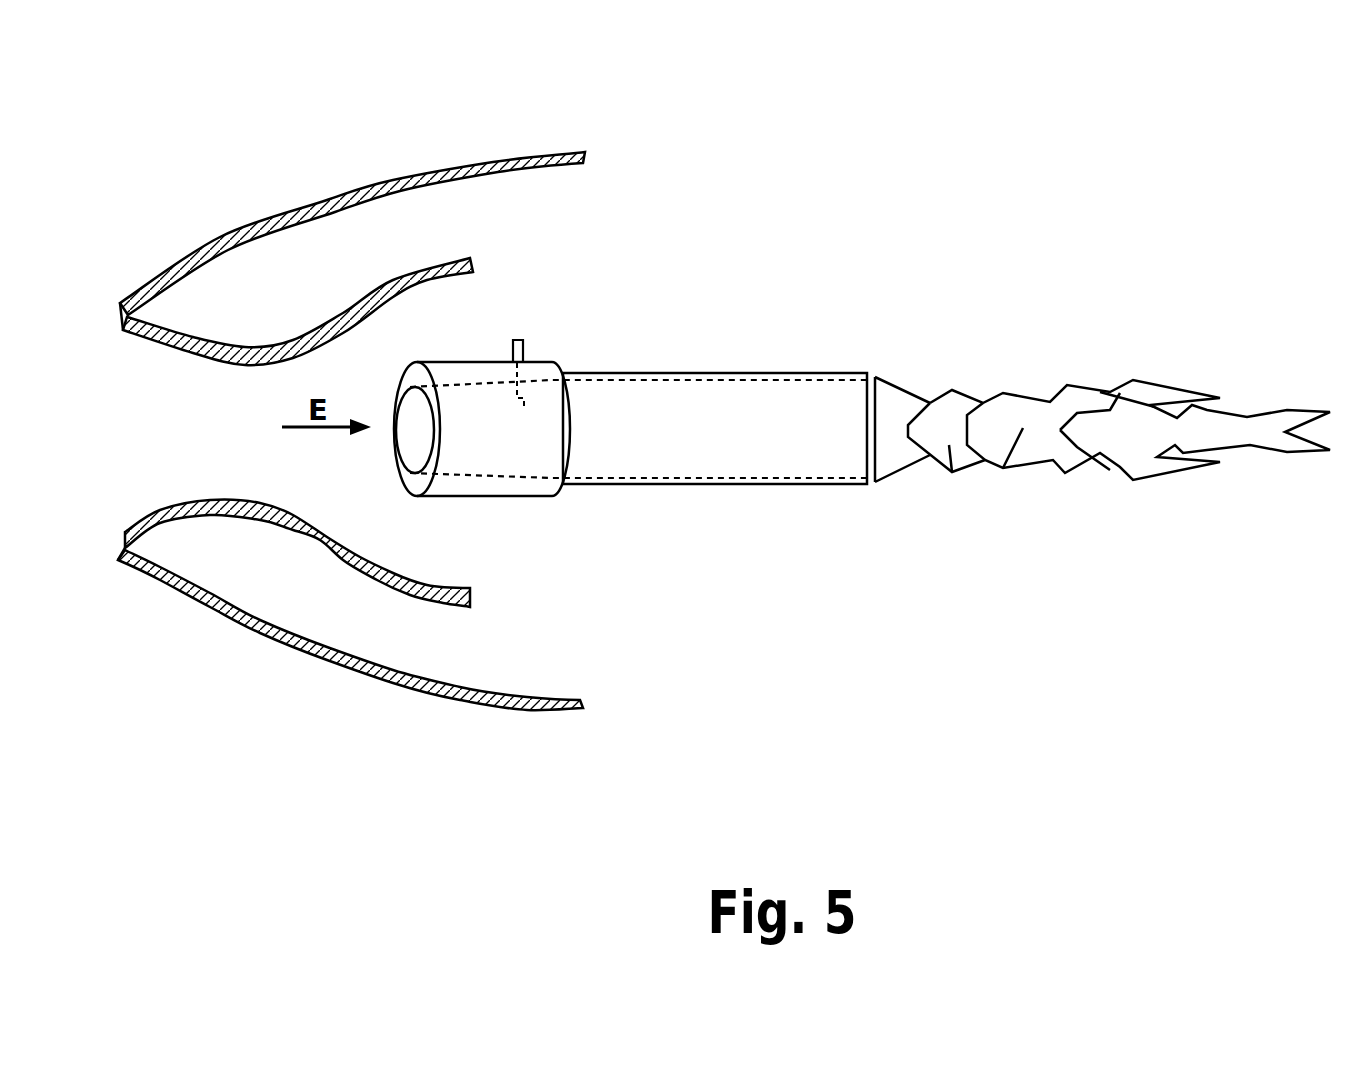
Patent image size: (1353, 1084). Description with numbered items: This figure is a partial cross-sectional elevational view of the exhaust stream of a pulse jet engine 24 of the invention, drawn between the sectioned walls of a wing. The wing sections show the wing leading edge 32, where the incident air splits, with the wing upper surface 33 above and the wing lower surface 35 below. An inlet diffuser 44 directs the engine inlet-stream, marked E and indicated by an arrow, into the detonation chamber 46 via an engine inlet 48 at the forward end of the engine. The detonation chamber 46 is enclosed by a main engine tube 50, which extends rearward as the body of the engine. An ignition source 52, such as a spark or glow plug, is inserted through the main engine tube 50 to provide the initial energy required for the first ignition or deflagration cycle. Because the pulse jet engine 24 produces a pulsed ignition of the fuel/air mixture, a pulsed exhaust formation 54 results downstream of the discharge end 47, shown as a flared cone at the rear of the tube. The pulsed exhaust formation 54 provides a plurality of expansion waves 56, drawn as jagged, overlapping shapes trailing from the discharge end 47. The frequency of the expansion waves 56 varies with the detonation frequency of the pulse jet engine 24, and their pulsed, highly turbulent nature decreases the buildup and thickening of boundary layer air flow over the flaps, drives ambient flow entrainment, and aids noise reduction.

The pulse jet engine 24 is at (708, 324).
The wing leading edge 32 is at (117, 308).
The wing upper surface 33 is at (450, 146).
The wing lower surface 35 is at (407, 707).
The inlet diffuser 44 is at (322, 538).
The detonation chamber 46 is at (728, 503).
The discharge end 47 is at (865, 428).
The engine inlet 48 is at (407, 440).
The main engine tube 50 is at (777, 485).
The ignition source 52 is at (517, 338).
The pulsed exhaust formation 54 is at (1328, 363).
The expansion waves 56 is at (1108, 437).